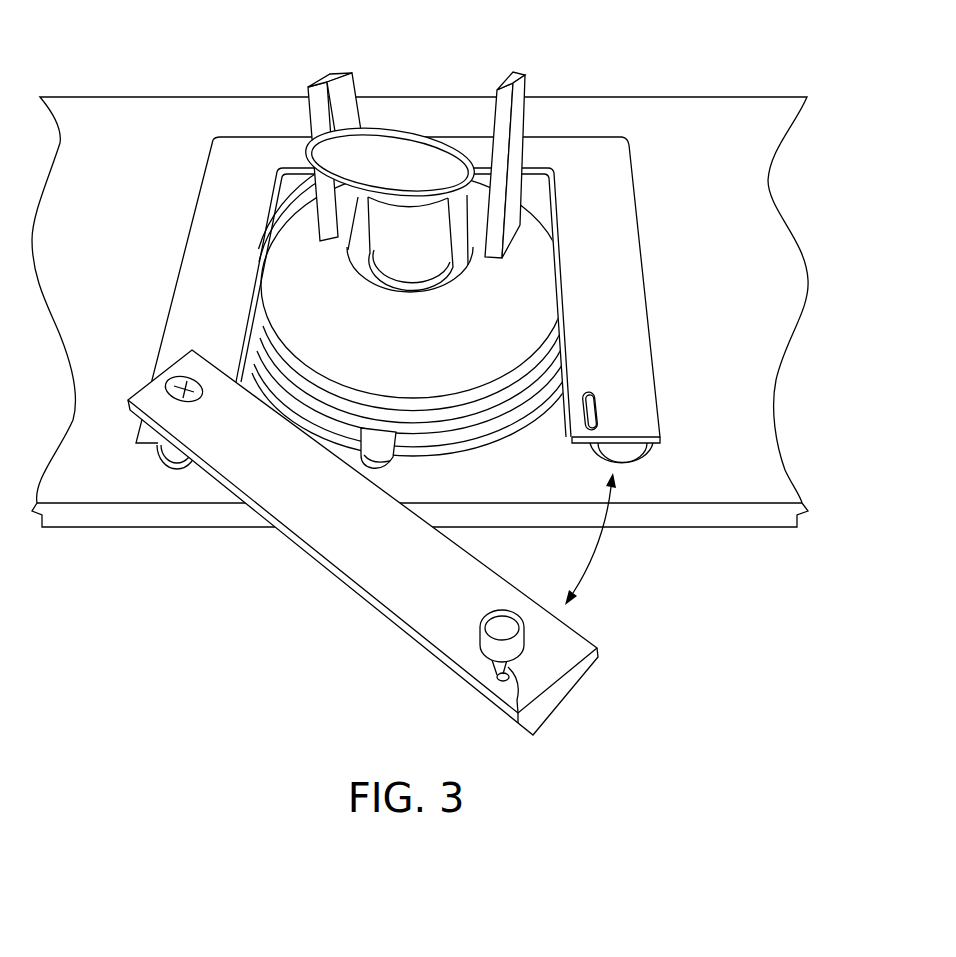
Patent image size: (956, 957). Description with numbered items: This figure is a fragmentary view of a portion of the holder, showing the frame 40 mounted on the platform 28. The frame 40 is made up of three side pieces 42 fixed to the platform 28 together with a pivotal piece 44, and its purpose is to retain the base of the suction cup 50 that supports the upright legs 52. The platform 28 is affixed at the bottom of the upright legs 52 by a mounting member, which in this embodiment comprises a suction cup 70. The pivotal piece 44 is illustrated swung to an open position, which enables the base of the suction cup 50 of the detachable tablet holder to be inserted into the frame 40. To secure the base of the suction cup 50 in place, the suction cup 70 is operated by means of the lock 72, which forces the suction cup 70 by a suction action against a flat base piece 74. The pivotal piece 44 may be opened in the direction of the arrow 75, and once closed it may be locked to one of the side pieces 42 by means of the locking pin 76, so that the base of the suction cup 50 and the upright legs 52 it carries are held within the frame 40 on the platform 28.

The platform 28 is at (700, 115).
The frame 40 is at (598, 130).
The side pieces 42 is at (238, 157).
The pivotal piece 44 is at (372, 558).
The base of the suction cup 50 is at (412, 284).
The upright legs 52 is at (351, 98).
The suction cup 70 is at (452, 427).
The lock 72 is at (398, 163).
The flat base piece 74 is at (527, 410).
The arrow 75 is at (595, 552).
The locking pin 76 is at (485, 648).